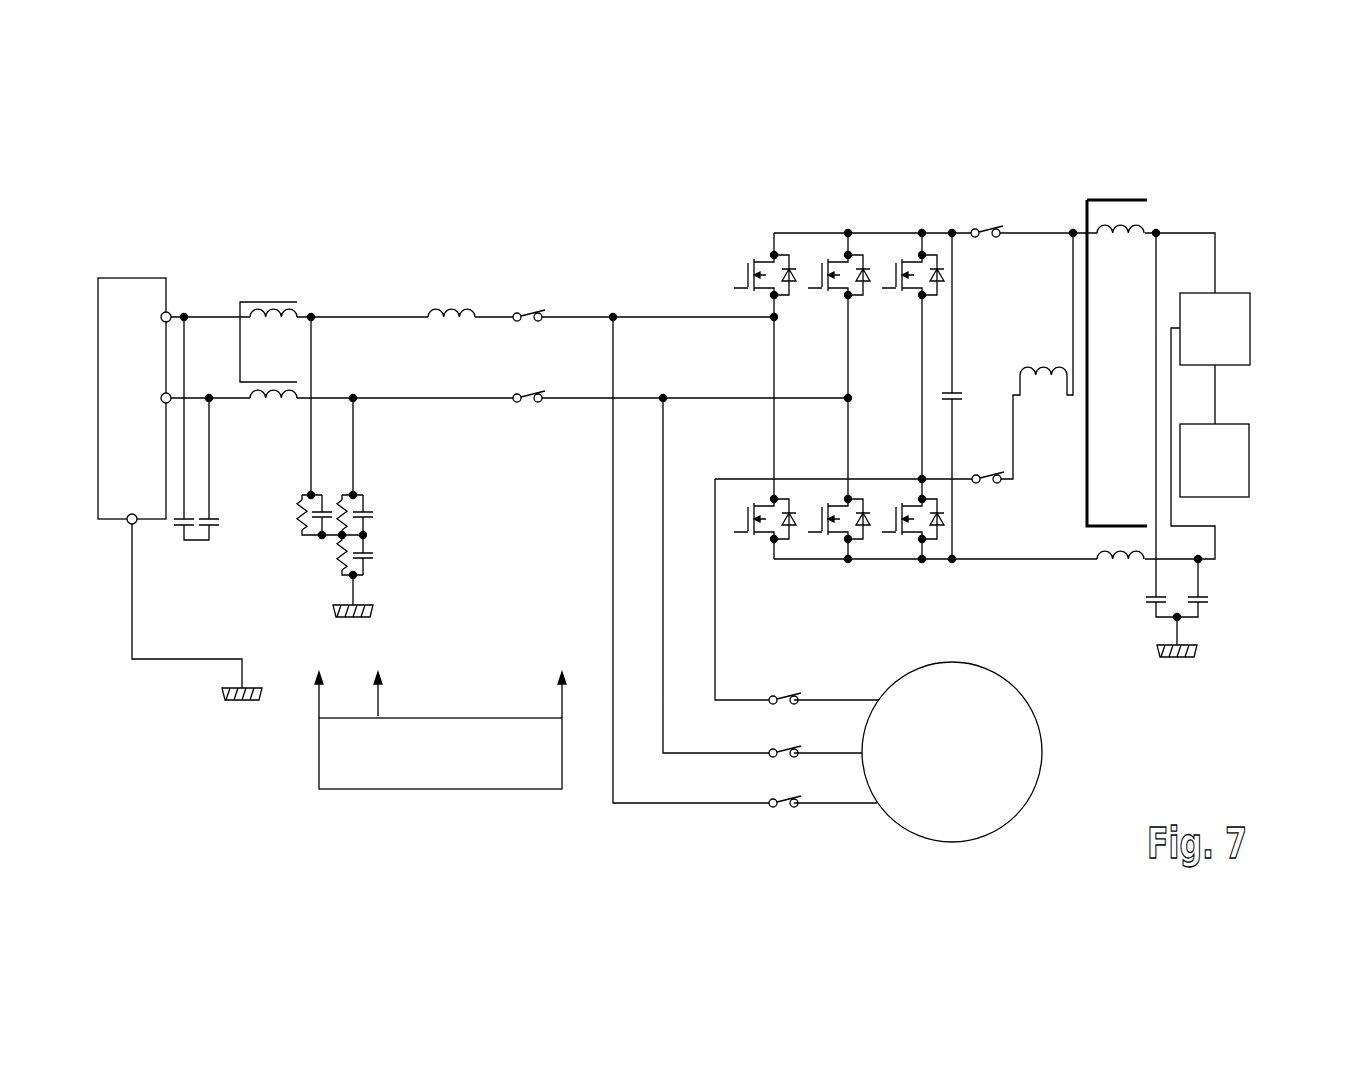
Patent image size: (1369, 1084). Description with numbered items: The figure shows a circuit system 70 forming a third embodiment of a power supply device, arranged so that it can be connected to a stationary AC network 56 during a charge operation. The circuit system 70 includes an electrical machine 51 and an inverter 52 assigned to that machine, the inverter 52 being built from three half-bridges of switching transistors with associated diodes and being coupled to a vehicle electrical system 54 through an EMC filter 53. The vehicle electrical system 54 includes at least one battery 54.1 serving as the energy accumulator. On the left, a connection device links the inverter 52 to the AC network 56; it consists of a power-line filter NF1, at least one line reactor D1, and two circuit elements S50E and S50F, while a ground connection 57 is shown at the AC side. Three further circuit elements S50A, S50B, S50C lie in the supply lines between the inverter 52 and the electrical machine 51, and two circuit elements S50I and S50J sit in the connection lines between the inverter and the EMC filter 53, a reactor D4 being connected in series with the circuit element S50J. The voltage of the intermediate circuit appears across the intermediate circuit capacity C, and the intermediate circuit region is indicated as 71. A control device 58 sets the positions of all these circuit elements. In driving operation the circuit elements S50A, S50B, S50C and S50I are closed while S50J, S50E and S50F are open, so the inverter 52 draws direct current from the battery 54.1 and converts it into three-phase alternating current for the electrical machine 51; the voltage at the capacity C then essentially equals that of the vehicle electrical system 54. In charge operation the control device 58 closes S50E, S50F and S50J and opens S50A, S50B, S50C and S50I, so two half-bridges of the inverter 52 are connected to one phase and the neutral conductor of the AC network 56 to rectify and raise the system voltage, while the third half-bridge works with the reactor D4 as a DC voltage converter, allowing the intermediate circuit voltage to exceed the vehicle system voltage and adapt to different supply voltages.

The AC network 56 is at (134, 278).
The ground connection 57 is at (190, 660).
The power-line filter NF1 is at (261, 301).
The line reactor D1 is at (455, 310).
The circuit element S50E is at (530, 311).
The circuit element S50F is at (530, 392).
The inverter 52 is at (863, 215).
The circuit element S50I is at (988, 228).
The circuit element S50J is at (981, 484).
The intermediate circuit 71 is at (1007, 396).
The intermediate circuit capacity C is at (957, 390).
The reactor D4 is at (990, 312).
The EMC filter 53 is at (1137, 411).
The vehicle electrical system 54 is at (1250, 330).
The battery 54.1 is at (1249, 460).
The electrical machine 51 is at (950, 675).
The circuit element S50A is at (786, 695).
The circuit element S50B is at (783, 750).
The circuit element S50C is at (783, 800).
The control device 58 is at (445, 785).
The circuit system 70 is at (1147, 760).